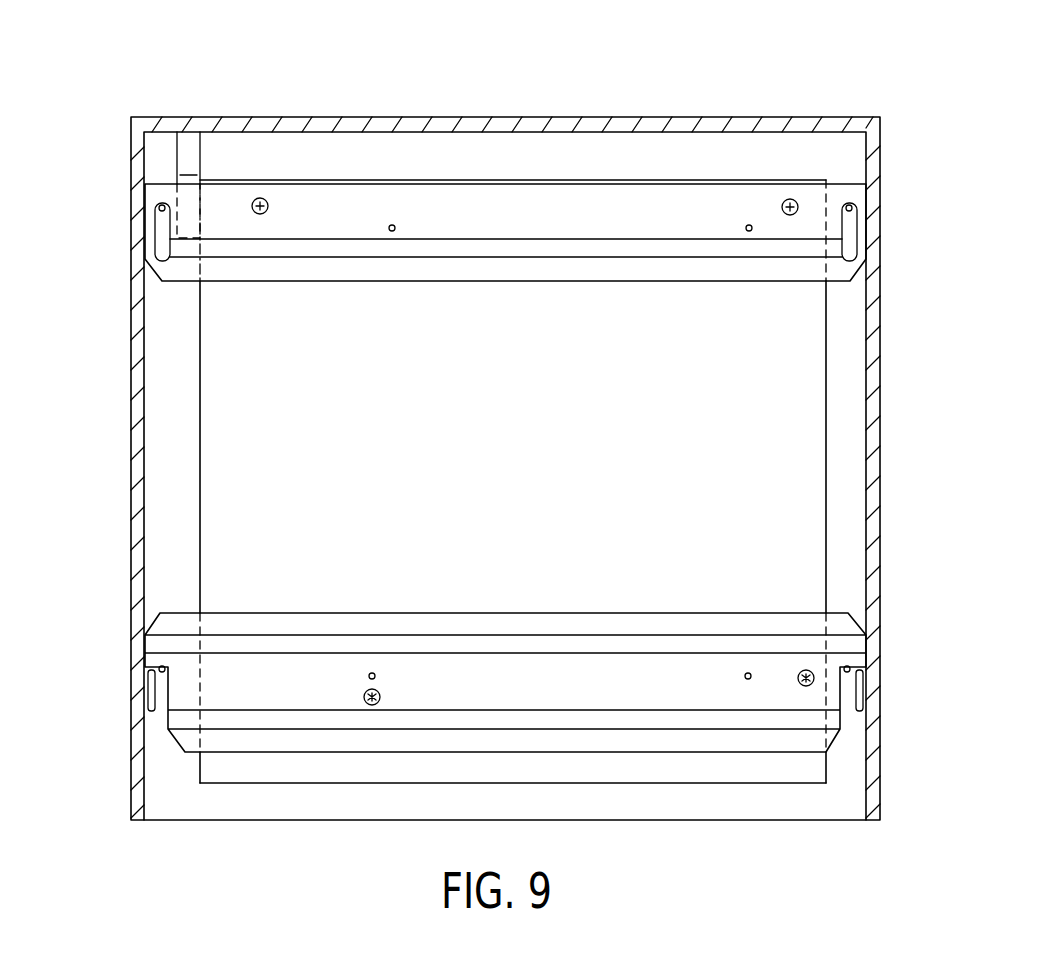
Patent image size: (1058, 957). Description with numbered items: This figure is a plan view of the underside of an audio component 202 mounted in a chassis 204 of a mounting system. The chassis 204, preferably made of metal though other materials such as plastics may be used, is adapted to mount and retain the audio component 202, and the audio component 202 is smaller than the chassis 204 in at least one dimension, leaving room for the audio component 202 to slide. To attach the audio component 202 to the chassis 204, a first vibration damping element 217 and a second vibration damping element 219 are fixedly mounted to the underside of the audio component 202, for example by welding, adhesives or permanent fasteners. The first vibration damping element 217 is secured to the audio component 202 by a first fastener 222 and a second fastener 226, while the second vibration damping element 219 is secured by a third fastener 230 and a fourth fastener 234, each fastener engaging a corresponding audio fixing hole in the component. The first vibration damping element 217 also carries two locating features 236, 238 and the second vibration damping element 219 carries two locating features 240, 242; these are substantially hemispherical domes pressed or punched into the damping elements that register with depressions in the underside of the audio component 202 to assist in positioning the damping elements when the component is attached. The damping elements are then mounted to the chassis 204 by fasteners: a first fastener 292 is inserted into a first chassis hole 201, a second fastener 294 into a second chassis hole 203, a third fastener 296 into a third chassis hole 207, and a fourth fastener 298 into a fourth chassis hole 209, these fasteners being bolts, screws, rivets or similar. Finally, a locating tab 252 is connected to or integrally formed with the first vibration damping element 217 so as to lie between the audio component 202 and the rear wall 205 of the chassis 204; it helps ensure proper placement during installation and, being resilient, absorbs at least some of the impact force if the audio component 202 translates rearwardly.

The chassis 204 is at (639, 88).
The rear wall 205 is at (353, 118).
The audio component 202 is at (810, 455).
The locating tab 252 is at (188, 143).
The first vibration damping element 217 is at (563, 297).
The second vibration damping element 219 is at (594, 585).
The second chassis hole 203 is at (159, 206).
The first chassis hole 201 is at (852, 208).
The fourth chassis hole 209 is at (158, 668).
The third chassis hole 207 is at (851, 668).
The second fastener 294 is at (156, 226).
The first fastener 292 is at (853, 226).
The fourth fastener 298 is at (153, 700).
The third fastener 296 is at (858, 695).
The second fastener 226 is at (268, 208).
The first fastener 222 is at (789, 216).
The fourth fastener 234 is at (381, 695).
The third fastener 230 is at (805, 688).
The locating feature 238 is at (392, 232).
The locating feature 236 is at (748, 232).
The locating feature 242 is at (371, 672).
The locating feature 240 is at (748, 672).